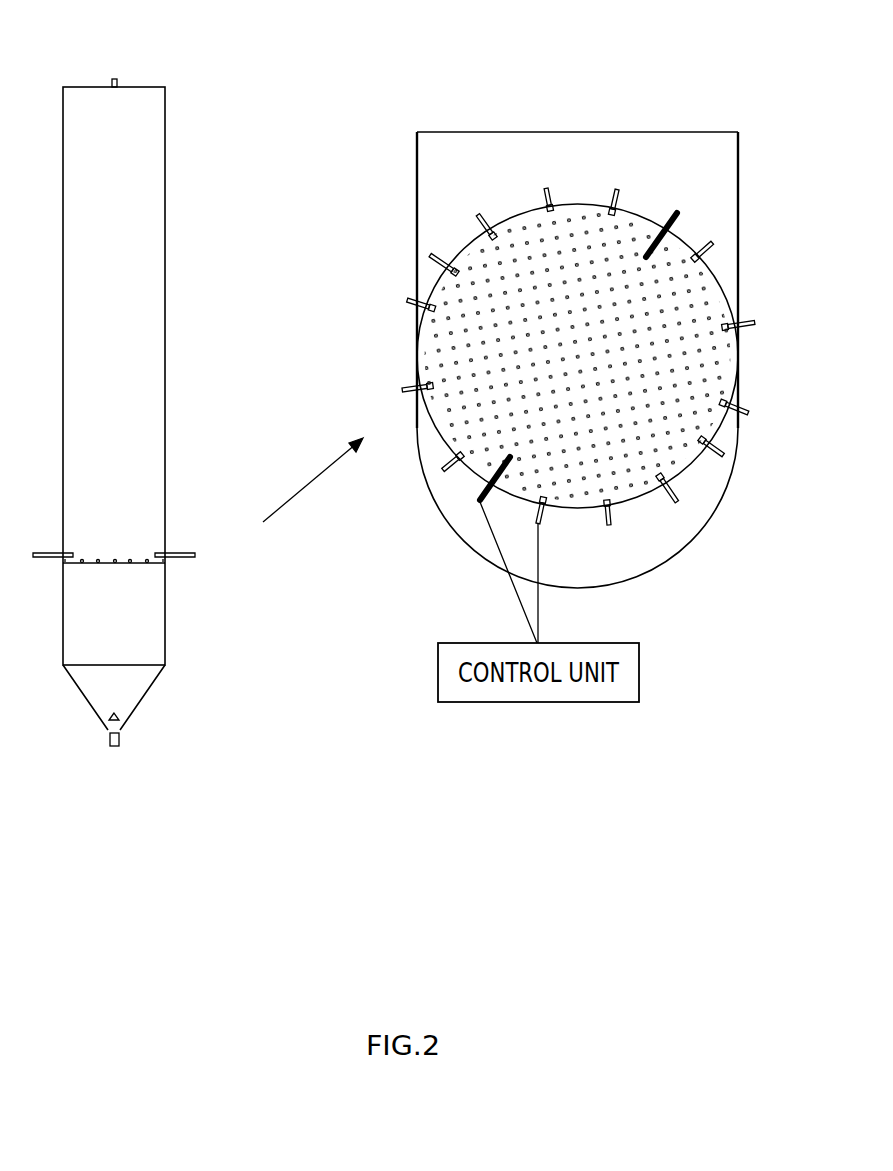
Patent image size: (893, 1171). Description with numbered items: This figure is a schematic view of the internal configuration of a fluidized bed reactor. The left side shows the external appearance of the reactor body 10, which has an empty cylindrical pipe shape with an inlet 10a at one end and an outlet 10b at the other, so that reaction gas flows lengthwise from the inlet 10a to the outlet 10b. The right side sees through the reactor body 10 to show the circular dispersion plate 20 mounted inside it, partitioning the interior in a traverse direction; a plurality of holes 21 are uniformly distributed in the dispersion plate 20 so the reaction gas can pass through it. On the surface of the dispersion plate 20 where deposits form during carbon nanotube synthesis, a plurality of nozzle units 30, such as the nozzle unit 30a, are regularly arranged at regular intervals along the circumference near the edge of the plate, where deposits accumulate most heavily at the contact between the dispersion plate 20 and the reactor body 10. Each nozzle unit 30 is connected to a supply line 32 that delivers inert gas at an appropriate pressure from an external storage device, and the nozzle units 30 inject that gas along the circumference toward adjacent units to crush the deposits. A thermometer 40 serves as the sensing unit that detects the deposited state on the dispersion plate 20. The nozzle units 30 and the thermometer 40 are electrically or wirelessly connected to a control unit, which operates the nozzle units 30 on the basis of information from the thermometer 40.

The reactor body 10 is at (147, 277).
The inlet 10a is at (119, 746).
The outlet 10b is at (115, 79).
The dispersion plate 20 is at (717, 420).
The holes 21 is at (438, 338).
The nozzle unit 30 is at (677, 483).
The nozzle unit 30a is at (727, 323).
The supply line 32 is at (665, 505).
The thermometer 40 is at (482, 500).